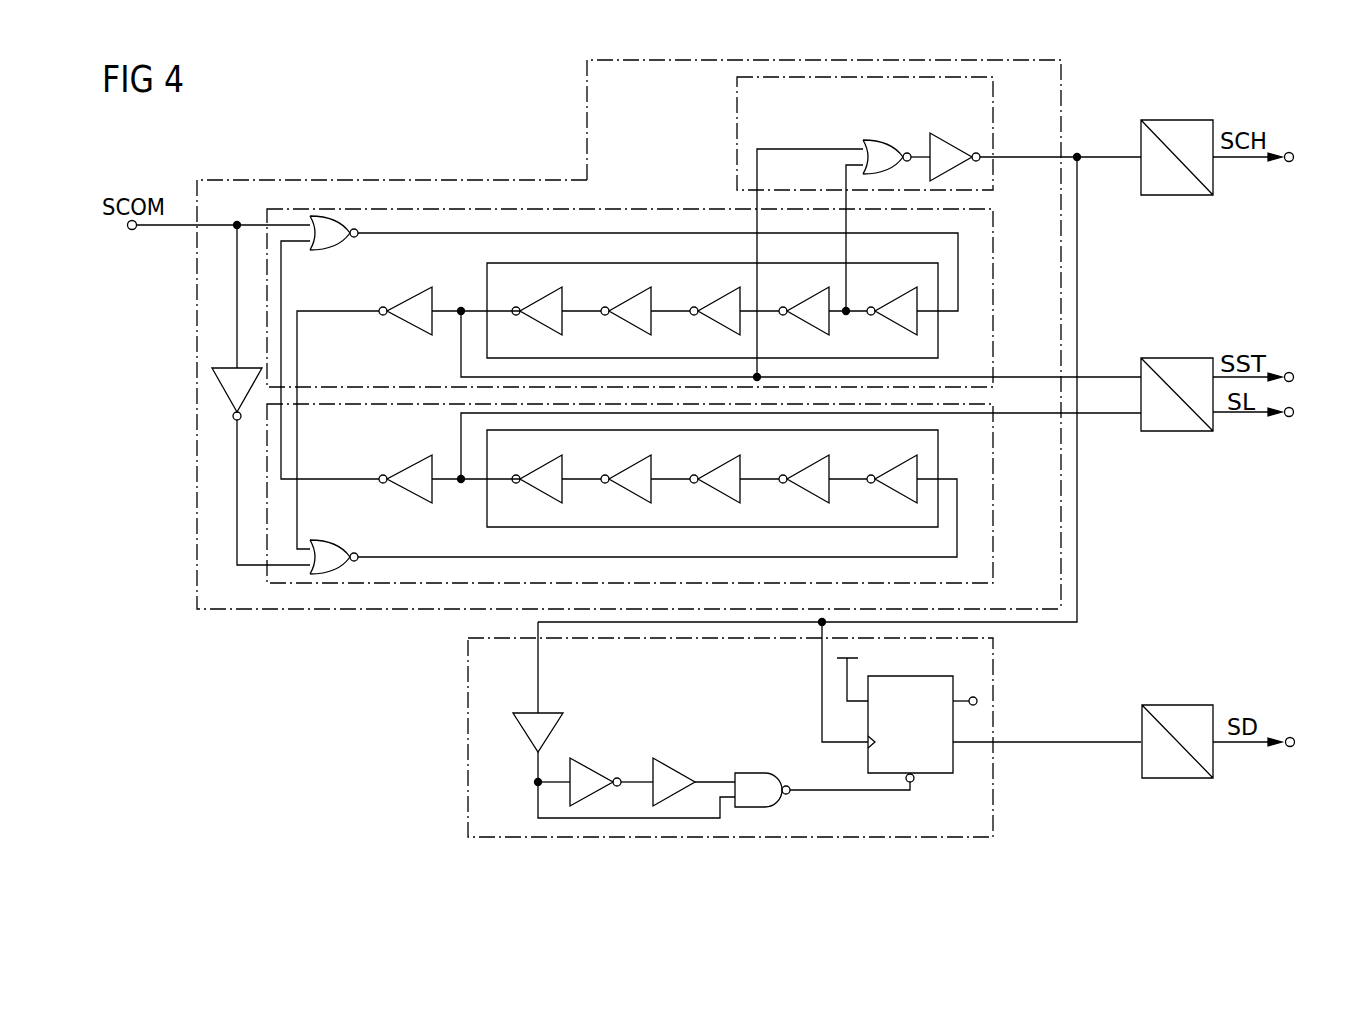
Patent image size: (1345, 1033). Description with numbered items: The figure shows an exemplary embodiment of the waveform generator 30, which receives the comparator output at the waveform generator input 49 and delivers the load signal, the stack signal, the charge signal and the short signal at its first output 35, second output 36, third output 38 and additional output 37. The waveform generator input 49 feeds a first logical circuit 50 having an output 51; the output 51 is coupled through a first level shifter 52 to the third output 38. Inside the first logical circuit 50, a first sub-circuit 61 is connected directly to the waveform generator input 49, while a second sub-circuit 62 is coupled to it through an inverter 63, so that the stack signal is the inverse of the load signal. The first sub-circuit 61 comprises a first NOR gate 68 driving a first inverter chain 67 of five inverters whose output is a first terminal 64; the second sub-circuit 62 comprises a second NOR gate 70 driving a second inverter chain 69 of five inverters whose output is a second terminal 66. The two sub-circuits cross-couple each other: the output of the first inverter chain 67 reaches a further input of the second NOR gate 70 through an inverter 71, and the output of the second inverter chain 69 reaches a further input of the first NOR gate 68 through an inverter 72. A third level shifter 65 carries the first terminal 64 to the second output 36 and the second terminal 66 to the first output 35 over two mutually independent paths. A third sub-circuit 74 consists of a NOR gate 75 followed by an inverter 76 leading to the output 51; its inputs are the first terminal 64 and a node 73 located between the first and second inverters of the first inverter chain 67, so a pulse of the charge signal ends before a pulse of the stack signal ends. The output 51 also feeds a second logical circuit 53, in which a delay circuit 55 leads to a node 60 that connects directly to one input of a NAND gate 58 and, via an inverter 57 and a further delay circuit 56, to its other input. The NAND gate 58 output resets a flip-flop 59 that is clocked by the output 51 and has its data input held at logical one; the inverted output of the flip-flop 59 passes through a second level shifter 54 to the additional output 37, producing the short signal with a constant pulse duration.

The waveform generator 30 is at (276, 744).
The first output 35 is at (1289, 417).
The second output 36 is at (1289, 372).
The additional output 37 is at (1292, 737).
The third output 38 is at (1289, 152).
The waveform generator input 49 is at (130, 230).
The first logical circuit 50 is at (423, 180).
The output of the first logical circuit 51 is at (1077, 155).
The first level shifter 52 is at (1178, 120).
The second logical circuit 53 is at (468, 752).
The second level shifter 54 is at (1177, 705).
The delay circuit 55 is at (548, 712).
The further delay circuit 56 is at (677, 765).
The inverter 57 is at (593, 765).
The NAND gate 58 is at (750, 772).
The flip-flop 59 is at (932, 776).
The node 60 is at (535, 782).
The first sub-circuit 61 is at (638, 208).
The second sub-circuit 62 is at (995, 532).
The inverter 63 is at (230, 366).
The first terminal 64 is at (995, 374).
The third level shifter 65 is at (1178, 358).
The second terminal 66 is at (993, 415).
The first inverter chain 67 is at (487, 285).
The first NOR gate 68 is at (318, 246).
The second inverter chain 69 is at (487, 500).
The second NOR gate 70 is at (320, 543).
The inverter 71 is at (405, 300).
The inverter 72 is at (405, 468).
The node 73 is at (848, 314).
The third sub-circuit 74 is at (737, 120).
The NOR gate 75 is at (873, 140).
The inverter 76 is at (958, 140).